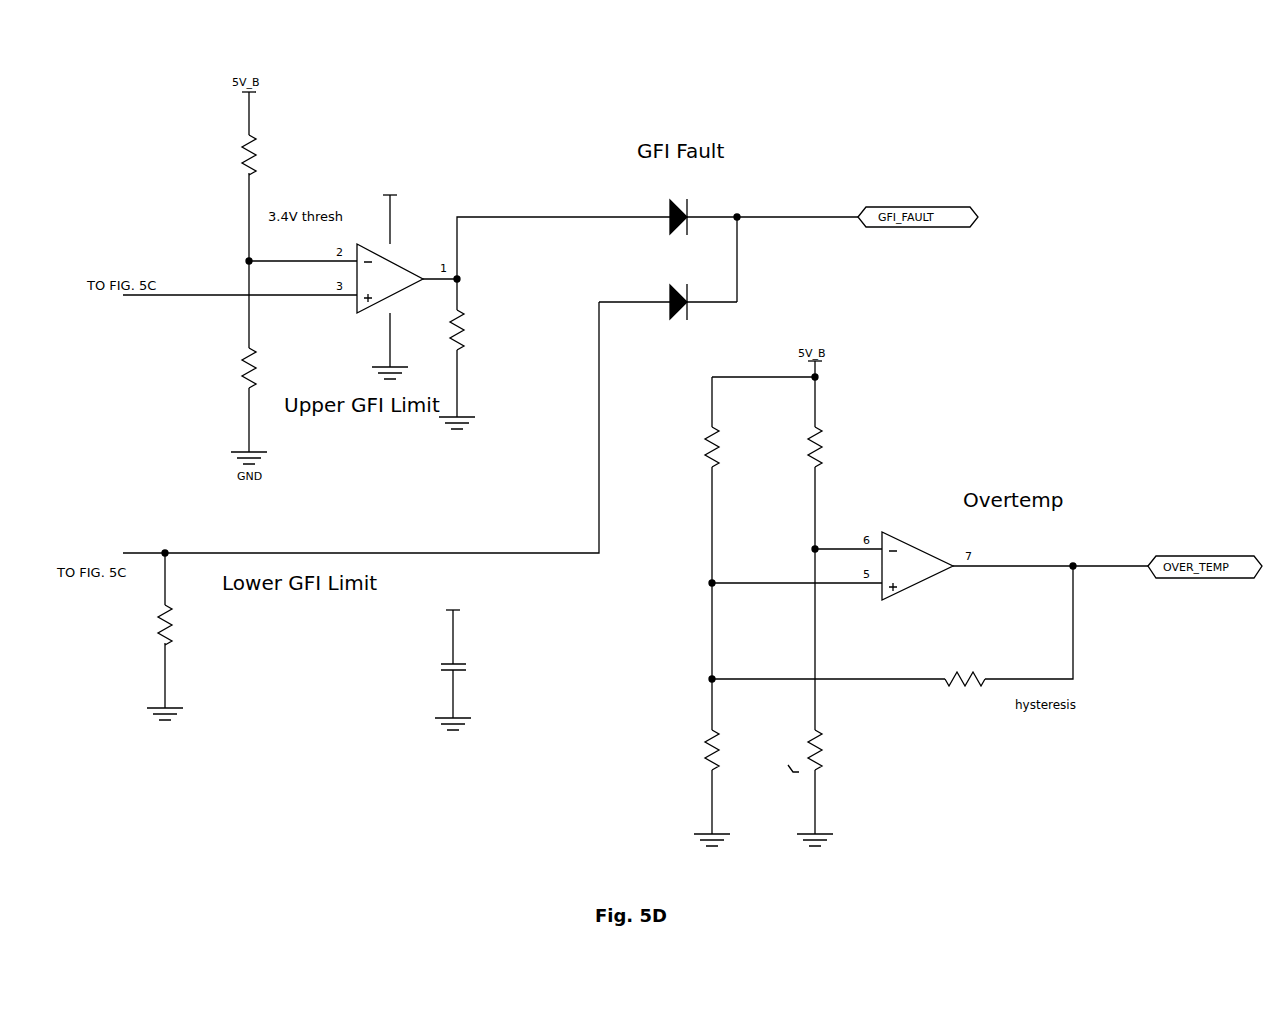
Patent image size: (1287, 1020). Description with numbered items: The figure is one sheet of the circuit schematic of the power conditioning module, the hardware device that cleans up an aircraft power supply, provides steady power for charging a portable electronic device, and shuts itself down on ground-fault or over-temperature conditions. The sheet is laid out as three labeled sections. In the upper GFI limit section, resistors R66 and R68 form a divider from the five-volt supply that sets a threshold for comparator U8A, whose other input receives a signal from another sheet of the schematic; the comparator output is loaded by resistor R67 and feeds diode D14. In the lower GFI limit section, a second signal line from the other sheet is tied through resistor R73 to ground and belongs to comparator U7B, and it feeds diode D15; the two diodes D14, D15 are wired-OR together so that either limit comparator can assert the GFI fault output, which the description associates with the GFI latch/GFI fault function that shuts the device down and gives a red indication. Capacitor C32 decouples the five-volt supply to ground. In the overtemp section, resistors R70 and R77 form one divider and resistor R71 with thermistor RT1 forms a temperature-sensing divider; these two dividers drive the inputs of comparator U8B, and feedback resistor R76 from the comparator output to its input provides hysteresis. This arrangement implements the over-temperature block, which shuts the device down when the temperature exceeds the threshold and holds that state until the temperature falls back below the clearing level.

The resistor 1.00K 1% R66 is at (271, 155).
The resistor 2.15K 1% R68 is at (271, 368).
The resistor 4.7K 5% R67 is at (471, 363).
The comparator LMC6482IM upper GFI limit U8A is at (364, 288).
The diode BAS116 D14 is at (691, 215).
The diode BAS116 D15 is at (668, 300).
The comparator LMC6482IM lower GFI limit U7B is at (160, 523).
The resistor 4.7K 5% R73 is at (180, 646).
The capacitor 0.1uF 50V C32 is at (473, 673).
The resistor 4.7K 5% R70 is at (731, 447).
The resistor 4.7K 5% R71 is at (834, 447).
The comparator LMC6482IM overtemp U8B is at (917, 572).
The hysteresis resistor 47K 5% R76 is at (892, 641).
The resistor 4.7K 5% R77 is at (726, 797).
The thermistor 33K NTC RT1 is at (824, 797).